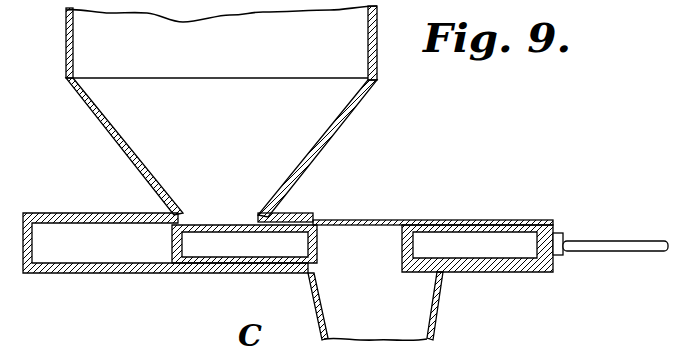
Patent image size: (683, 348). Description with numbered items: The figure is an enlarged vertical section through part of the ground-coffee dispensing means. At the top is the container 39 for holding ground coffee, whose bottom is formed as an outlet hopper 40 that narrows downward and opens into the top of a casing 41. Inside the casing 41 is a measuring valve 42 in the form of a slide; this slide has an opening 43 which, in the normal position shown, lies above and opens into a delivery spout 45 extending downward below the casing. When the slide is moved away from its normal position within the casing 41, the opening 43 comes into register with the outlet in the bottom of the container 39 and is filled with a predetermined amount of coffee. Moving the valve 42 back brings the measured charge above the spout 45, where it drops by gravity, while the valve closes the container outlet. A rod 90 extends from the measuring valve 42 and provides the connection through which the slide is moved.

The container 39 is at (368, 40).
The outlet hopper 40 is at (332, 138).
The casing 41 is at (88, 213).
The measuring valve 42 is at (453, 240).
The opening 43 is at (350, 242).
The delivery spout 45 is at (415, 318).
The rod 90 is at (612, 242).